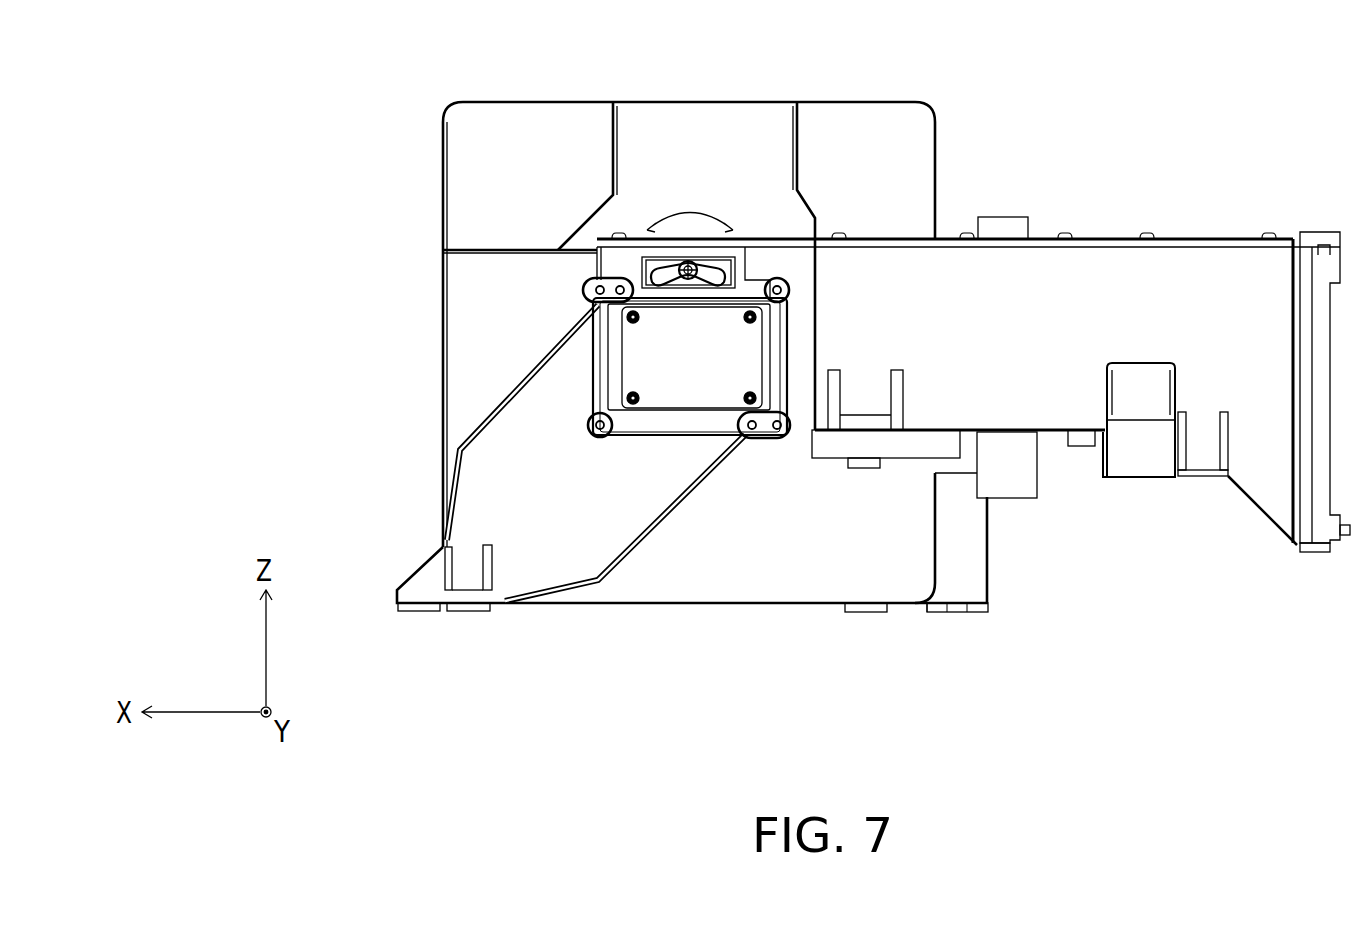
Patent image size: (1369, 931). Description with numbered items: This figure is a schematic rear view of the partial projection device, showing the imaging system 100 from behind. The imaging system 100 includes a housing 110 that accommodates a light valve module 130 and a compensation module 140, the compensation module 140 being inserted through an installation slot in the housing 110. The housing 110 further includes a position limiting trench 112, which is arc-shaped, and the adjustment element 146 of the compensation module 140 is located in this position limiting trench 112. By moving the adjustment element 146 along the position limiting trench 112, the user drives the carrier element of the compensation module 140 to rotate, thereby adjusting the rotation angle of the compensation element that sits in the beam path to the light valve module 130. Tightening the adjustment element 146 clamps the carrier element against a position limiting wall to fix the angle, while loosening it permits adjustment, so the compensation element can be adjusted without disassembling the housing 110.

The imaging system 100 is at (178, 20).
The housing 110 is at (1198, 283).
The position limiting trench 112 is at (722, 272).
The light valve module 130 is at (677, 365).
The compensation module 140 is at (510, 200).
The adjustment element 146 is at (648, 276).